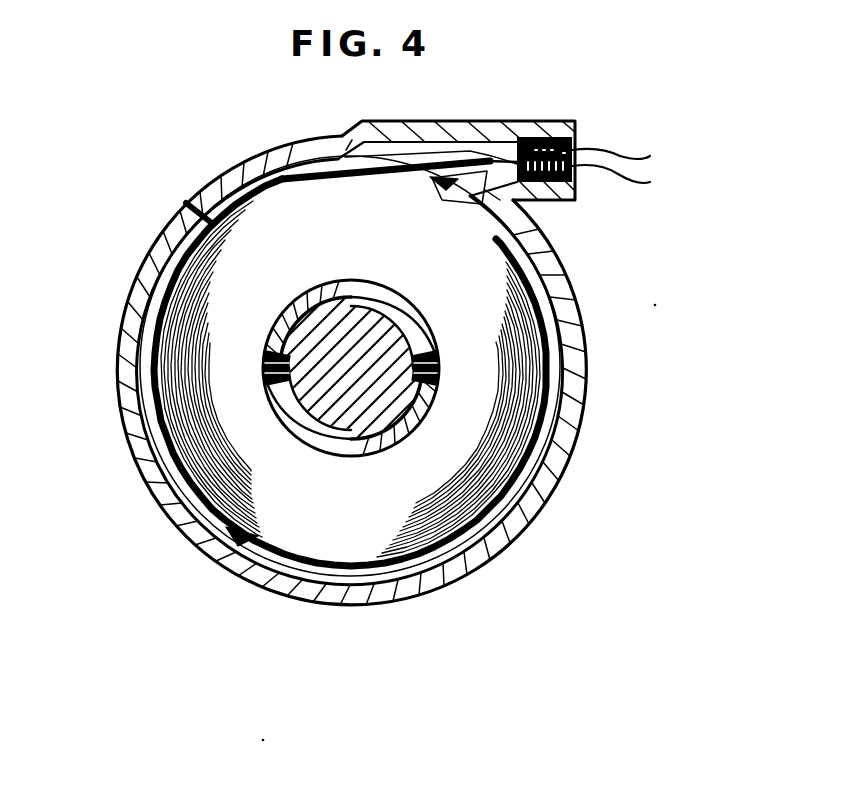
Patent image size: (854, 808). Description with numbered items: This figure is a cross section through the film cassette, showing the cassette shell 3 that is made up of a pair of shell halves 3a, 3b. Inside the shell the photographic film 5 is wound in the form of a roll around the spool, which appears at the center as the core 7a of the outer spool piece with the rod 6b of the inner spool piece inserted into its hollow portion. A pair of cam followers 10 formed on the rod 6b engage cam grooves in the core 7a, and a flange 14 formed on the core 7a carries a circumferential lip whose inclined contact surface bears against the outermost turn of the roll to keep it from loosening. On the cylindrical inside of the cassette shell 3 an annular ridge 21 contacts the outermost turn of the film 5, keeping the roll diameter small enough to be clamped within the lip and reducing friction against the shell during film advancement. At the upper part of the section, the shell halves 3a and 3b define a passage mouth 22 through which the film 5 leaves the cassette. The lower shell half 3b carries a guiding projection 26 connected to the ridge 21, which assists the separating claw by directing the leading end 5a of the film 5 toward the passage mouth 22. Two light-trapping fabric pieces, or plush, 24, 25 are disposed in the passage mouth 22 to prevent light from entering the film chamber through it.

The cassette shell 3 is at (291, 676).
The shell half 3a is at (190, 540).
The lower shell half 3b is at (297, 600).
The photographic film 5 is at (197, 207).
The leading end of the film 5a is at (455, 160).
The rod 6b is at (340, 325).
The core 7a is at (342, 450).
The cam followers 10 is at (440, 366).
The flange 14 is at (465, 203).
The annular ridge 21 is at (138, 342).
The passage mouth 22 is at (585, 139).
The light-trapping fabric piece 24 is at (636, 185).
The light-trapping fabric piece 25 is at (636, 157).
The guiding projection 26 is at (448, 186).